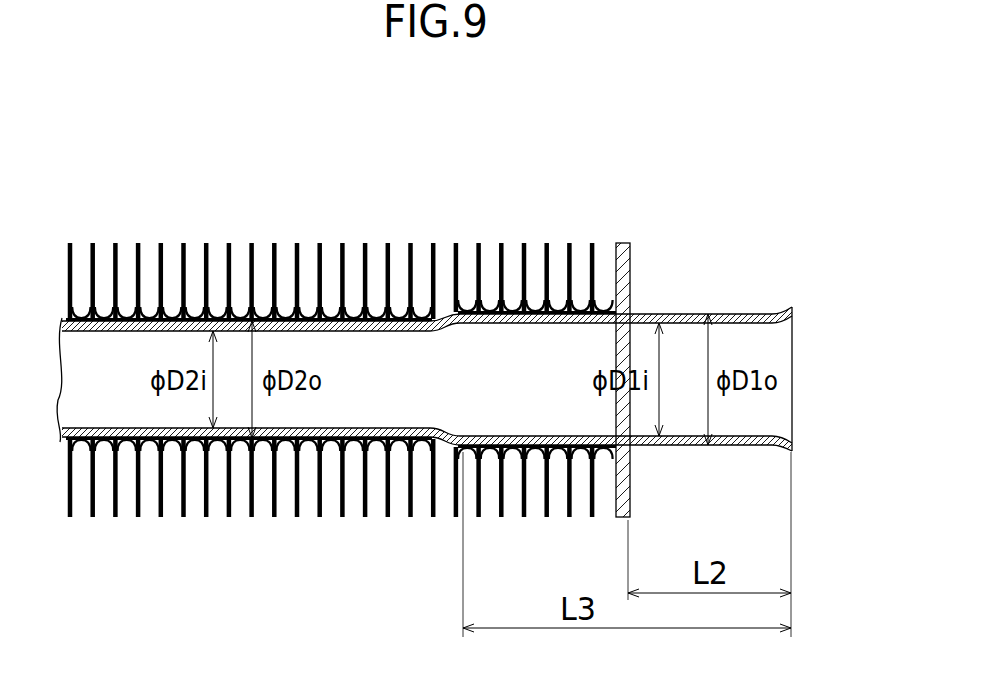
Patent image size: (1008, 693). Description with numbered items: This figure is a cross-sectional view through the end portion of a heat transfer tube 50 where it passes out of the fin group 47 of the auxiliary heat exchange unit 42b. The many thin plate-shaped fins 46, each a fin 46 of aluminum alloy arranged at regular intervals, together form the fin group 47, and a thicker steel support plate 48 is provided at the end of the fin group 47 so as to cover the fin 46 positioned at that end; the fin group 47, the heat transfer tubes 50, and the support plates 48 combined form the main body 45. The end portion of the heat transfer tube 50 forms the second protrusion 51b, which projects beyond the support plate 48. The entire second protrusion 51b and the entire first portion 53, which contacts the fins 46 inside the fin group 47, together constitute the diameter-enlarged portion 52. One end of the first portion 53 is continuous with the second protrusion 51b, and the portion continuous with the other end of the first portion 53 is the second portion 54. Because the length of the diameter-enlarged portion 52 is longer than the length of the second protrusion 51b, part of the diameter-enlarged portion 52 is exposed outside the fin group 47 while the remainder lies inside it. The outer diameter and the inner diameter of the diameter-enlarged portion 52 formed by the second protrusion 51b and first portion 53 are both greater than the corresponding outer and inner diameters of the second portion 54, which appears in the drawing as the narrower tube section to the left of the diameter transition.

The auxiliary heat exchange unit 42b is at (120, 213).
The main body 45 is at (241, 243).
The fin 46 is at (555, 252).
The fin group 47 is at (388, 243).
The support plate 48 is at (634, 250).
The heat transfer tube 50 is at (793, 355).
The second protrusion 51b is at (733, 313).
The diameter-enlarged portion 52 is at (681, 448).
The first portion 53 is at (531, 437).
The second portion 54 is at (362, 428).